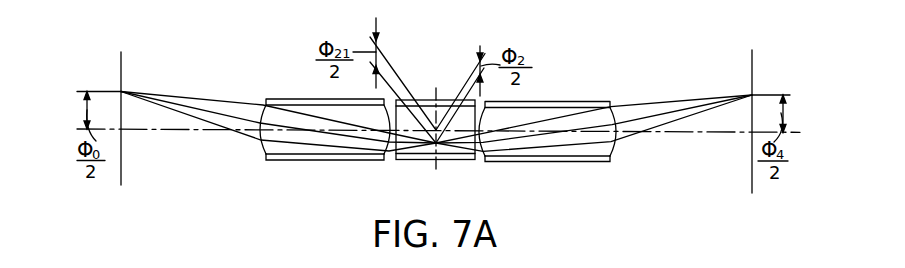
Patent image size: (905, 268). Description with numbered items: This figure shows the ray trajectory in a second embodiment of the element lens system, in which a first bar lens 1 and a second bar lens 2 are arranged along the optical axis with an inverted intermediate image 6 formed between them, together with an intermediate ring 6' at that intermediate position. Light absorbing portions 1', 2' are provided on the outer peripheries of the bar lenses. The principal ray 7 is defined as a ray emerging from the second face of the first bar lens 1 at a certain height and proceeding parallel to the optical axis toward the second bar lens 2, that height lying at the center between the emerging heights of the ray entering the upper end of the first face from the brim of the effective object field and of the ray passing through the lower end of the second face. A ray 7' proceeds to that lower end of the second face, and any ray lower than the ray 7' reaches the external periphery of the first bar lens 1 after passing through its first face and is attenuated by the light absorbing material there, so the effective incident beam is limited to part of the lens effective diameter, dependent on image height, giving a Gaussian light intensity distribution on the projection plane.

The first bar lens 1 is at (320, 142).
The light absorbing portion 1' is at (328, 148).
The second bar lens 2 is at (550, 148).
The light absorbing portion 2' is at (544, 153).
The inverted intermediate image 6 is at (435, 142).
The intermediate ring 6' is at (426, 177).
The principal ray 7 is at (436, 105).
The ray 7' is at (436, 129).